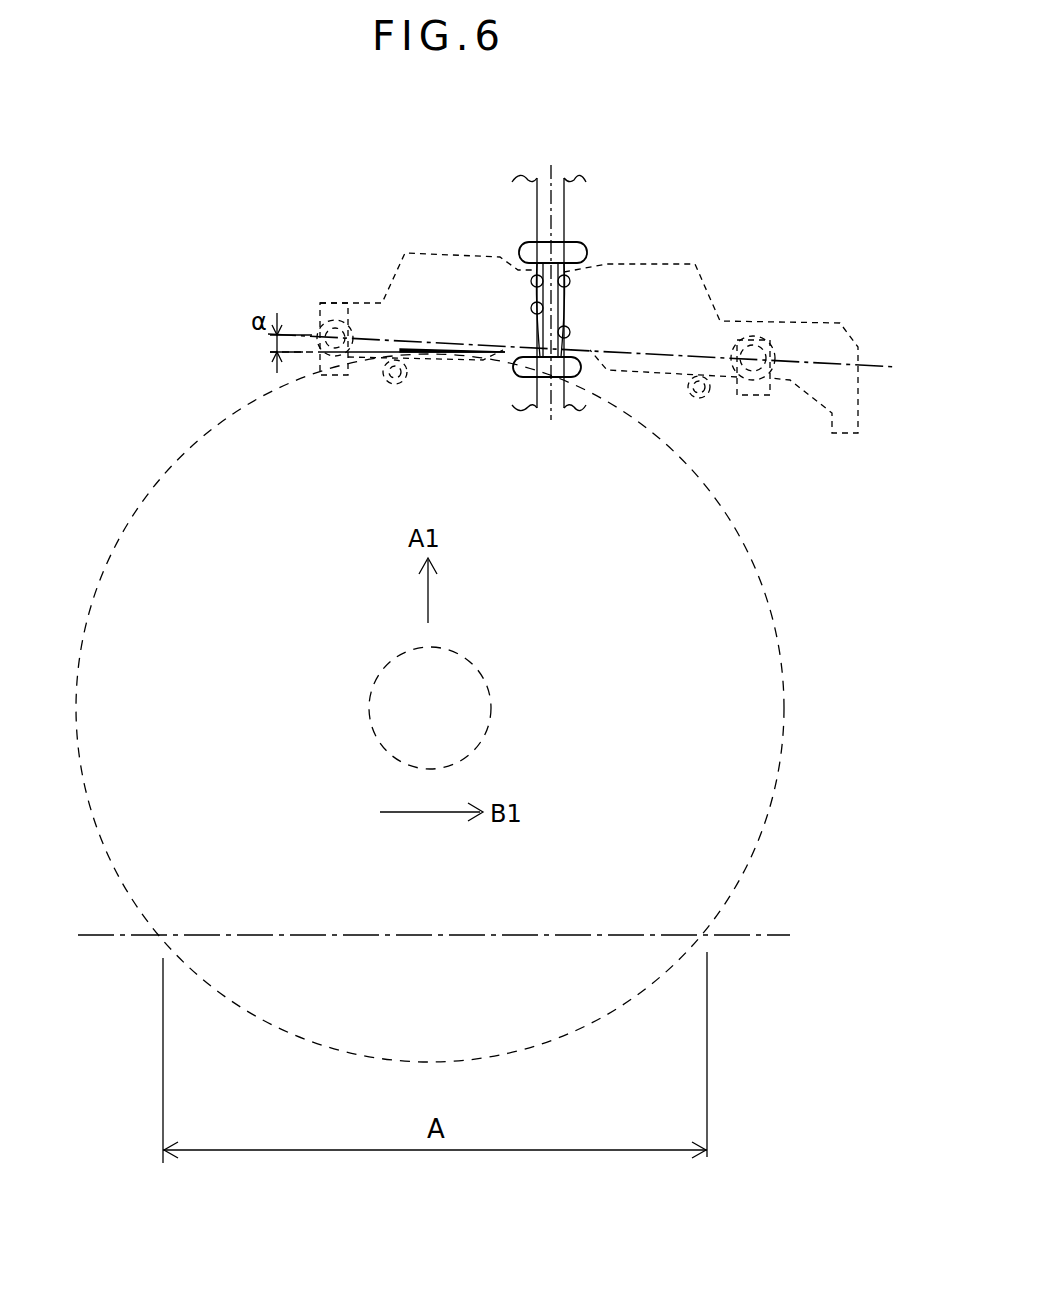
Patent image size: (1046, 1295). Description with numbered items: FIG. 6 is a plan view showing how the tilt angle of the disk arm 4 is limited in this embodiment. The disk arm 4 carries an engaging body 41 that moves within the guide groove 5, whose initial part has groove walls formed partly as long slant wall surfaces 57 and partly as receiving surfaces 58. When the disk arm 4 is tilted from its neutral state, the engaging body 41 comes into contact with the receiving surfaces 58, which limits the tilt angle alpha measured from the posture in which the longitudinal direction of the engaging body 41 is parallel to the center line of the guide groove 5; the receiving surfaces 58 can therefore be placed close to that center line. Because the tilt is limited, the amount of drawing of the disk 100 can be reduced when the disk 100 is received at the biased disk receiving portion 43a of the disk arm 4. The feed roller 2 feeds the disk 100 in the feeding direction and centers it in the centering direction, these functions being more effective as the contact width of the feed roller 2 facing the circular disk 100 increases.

The feed roller 2 is at (760, 934).
The disk arm 4 is at (683, 265).
The guide groove 5 is at (560, 172).
The engaging body 41 is at (570, 305).
The disk receiving portion 43a is at (346, 302).
The slant wall surfaces 57 is at (533, 289).
The receiving surfaces 58 is at (533, 311).
The disk 100 is at (783, 710).